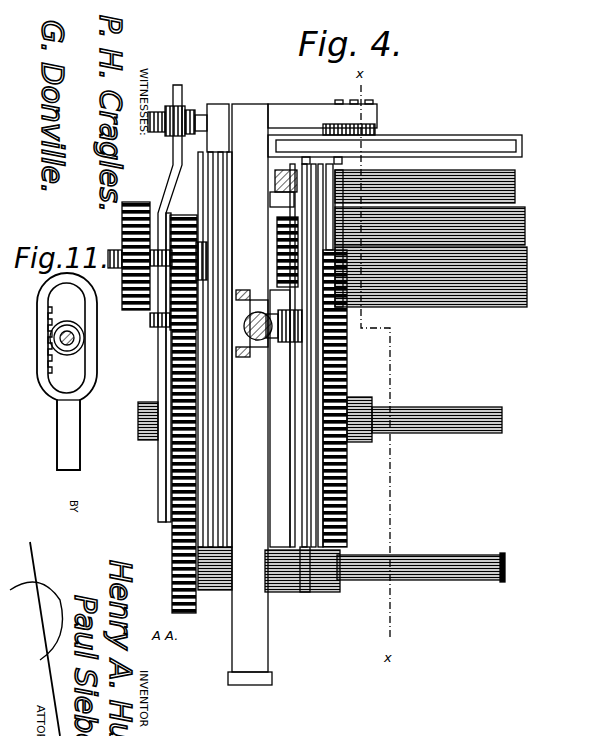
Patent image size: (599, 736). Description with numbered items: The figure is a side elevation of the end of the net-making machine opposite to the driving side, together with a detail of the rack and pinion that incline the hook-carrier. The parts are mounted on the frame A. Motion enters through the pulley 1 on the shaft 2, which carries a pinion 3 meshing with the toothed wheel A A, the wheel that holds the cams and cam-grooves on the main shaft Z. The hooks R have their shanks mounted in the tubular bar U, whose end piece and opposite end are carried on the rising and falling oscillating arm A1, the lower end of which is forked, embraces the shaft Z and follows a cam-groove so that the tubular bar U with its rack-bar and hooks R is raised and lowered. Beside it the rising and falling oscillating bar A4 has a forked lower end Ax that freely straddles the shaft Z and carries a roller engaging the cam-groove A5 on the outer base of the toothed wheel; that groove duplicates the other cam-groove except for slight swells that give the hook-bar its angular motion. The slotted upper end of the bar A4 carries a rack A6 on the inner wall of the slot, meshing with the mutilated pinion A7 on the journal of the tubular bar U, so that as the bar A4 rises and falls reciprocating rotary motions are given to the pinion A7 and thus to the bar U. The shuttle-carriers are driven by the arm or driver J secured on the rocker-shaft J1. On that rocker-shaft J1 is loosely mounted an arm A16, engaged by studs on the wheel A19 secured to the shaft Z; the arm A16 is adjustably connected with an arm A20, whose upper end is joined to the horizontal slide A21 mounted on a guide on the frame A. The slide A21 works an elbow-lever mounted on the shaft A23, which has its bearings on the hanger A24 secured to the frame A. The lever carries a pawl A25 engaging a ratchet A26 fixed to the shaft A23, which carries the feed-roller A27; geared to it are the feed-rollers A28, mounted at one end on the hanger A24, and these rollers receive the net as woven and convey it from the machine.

In FIG. 4, the frame A is at (250, 394).
In FIG. 4, the rising and falling oscillating arm A1 is at (212, 192).
In FIG. 4, the rising and falling oscillating bar A4 is at (170, 195).
In FIG. 11, the rising and falling oscillating bar A4 is at (58, 432).
In FIG. 4, the cam-groove A5 is at (160, 384).
In FIG. 4, the rack A6 is at (183, 102).
In FIG. 11, the rack A6 is at (48, 340).
In FIG. 4, the mutilated pinion A7 is at (170, 100).
In FIG. 11, the mutilated pinion A7 is at (68, 322).
In FIG. 4, the fork Ax is at (150, 320).
In FIG. 4, the pulley 1 is at (122, 218).
In FIG. 4, the shaft 2 is at (112, 268).
In FIG. 4, the pinion 3 is at (196, 228).
In FIG. 4, the arm A16 is at (310, 590).
In FIG. 4, the wheel A19 is at (350, 398).
In FIG. 4, the arm A20 is at (276, 470).
In FIG. 4, the horizontal slide A21 is at (258, 350).
In FIG. 4, the shaft A23 is at (363, 238).
In FIG. 4, the hanger A24 is at (300, 322).
In FIG. 4, the pawl A25 is at (283, 187).
In FIG. 4, the ratchet A26 is at (282, 262).
In FIG. 4, the feed-roller A27 is at (525, 222).
In FIG. 4, the feed-rollers A28 is at (515, 186).
In FIG. 4, the arm or driver J is at (197, 530).
In FIG. 4, the rocker-shaft J1 is at (397, 571).
In FIG. 4, the hooks R is at (378, 130).
In FIG. 4, the tubular bar U is at (320, 107).
In FIG. 11, the tubular bar U is at (66, 346).
In FIG. 4, the shaft Z is at (502, 418).